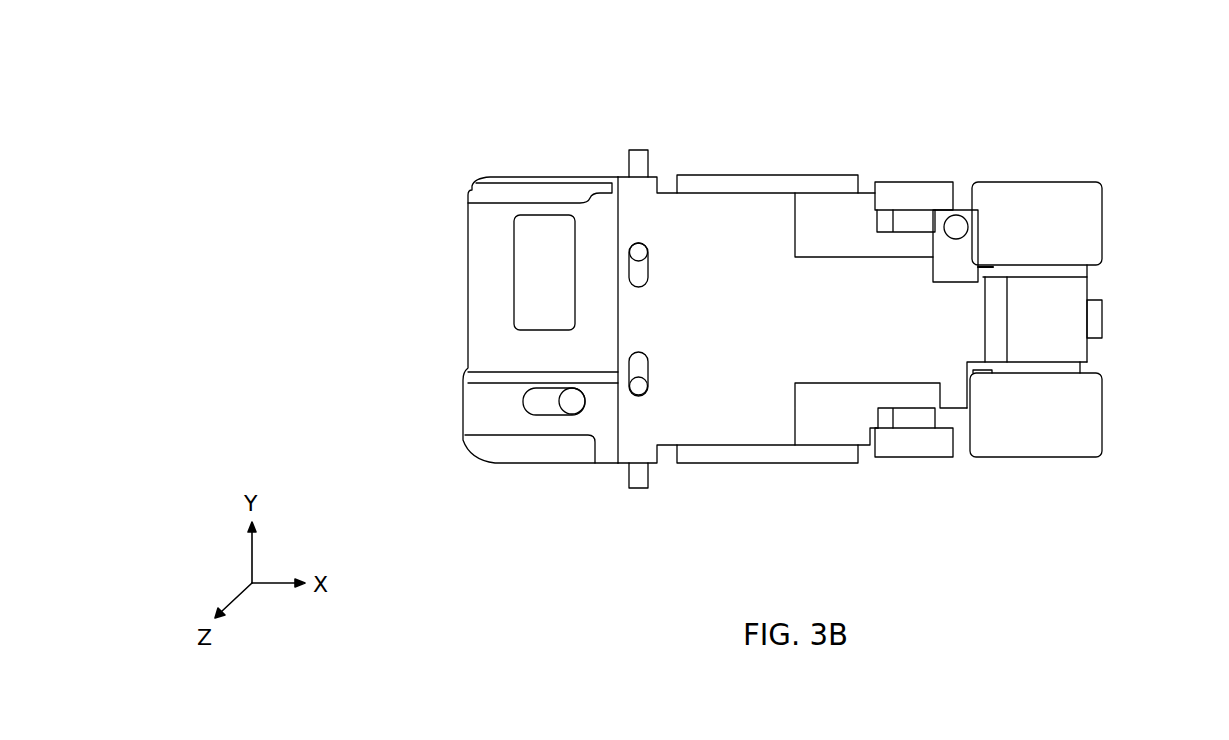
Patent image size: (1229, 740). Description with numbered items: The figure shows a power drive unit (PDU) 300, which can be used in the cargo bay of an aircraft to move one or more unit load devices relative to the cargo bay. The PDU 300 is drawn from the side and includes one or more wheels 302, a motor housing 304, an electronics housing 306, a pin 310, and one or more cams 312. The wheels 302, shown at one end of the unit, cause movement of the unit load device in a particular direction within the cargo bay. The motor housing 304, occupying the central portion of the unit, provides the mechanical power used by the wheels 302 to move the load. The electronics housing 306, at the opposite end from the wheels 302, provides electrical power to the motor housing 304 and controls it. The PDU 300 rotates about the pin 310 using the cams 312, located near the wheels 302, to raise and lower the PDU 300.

The power drive unit 300 is at (497, 104).
The wheels 302 is at (1050, 197).
The motor housing 304 is at (727, 232).
The electronics housing 306 is at (598, 193).
The pin 310 is at (632, 152).
The cams 312 is at (896, 184).